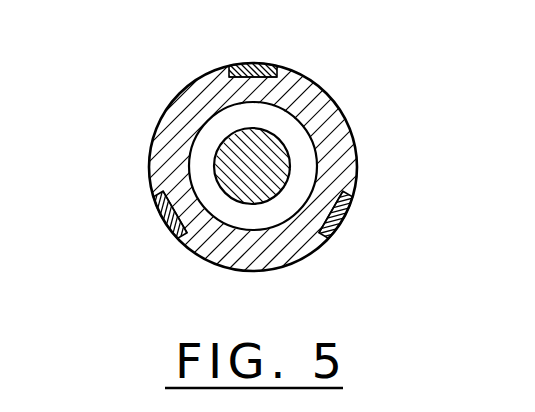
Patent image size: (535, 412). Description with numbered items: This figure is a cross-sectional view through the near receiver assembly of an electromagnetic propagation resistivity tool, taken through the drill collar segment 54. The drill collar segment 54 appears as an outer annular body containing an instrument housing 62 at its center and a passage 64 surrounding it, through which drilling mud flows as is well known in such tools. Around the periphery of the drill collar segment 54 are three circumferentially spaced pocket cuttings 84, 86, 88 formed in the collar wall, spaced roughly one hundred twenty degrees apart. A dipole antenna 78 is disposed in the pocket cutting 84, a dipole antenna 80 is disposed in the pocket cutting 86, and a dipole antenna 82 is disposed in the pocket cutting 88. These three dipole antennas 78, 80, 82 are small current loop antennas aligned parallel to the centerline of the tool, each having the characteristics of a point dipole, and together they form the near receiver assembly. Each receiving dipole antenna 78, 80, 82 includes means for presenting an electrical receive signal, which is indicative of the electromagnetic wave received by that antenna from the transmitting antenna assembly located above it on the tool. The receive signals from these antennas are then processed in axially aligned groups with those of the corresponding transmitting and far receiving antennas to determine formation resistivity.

The drill collar segment 54 is at (345, 140).
The instrument housing 62 is at (232, 143).
The passage 64 is at (290, 122).
The dipole antenna 78 is at (258, 61).
The dipole antenna 80 is at (165, 219).
The dipole antenna 82 is at (347, 211).
The pocket cutting 84 is at (236, 63).
The pocket cutting 86 is at (162, 198).
The pocket cutting 88 is at (337, 229).